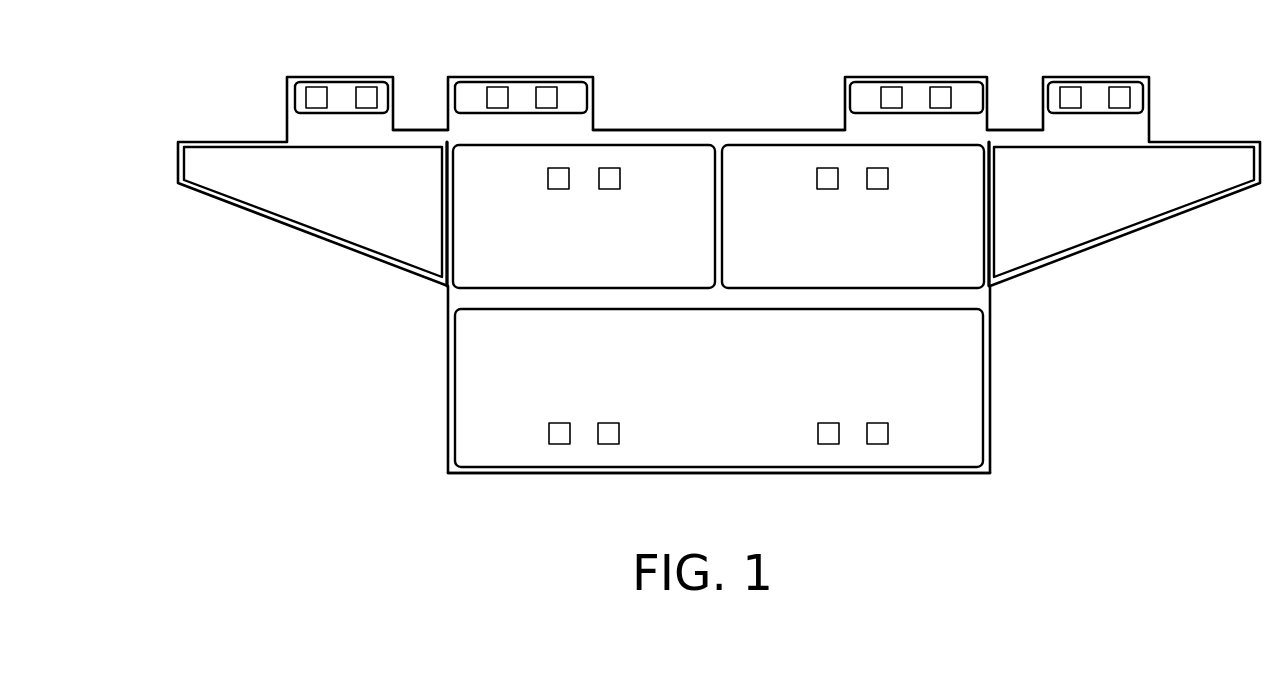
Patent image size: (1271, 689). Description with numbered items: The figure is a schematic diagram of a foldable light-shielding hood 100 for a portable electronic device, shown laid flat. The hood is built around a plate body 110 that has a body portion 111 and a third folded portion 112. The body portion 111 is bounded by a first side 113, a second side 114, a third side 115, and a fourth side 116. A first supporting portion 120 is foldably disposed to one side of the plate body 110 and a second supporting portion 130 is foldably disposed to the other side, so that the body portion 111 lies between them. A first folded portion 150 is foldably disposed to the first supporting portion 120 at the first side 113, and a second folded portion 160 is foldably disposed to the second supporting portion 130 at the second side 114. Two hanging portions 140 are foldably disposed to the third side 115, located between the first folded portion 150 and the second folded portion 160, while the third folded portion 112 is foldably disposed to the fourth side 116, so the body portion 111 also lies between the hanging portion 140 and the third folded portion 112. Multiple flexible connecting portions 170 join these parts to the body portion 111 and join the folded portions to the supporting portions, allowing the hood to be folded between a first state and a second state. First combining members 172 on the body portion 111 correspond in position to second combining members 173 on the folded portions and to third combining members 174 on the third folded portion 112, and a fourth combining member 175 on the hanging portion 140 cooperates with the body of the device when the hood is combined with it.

The foldable light-shielding hood 100 is at (1242, 502).
The plate body 110 is at (315, 305).
The body portion 111 is at (477, 260).
The third folded portion 112 is at (503, 383).
The first side 113 is at (446, 235).
The second side 114 is at (988, 243).
The third side 115 is at (630, 128).
The fourth side 116 is at (941, 290).
The first supporting portion 120 is at (218, 163).
The second supporting portion 130 is at (1198, 162).
The hanging portion 140 is at (523, 95).
The first folded portion 150 is at (338, 92).
The second folded portion 160 is at (1088, 95).
The flexible connecting portions 170 is at (318, 130).
The first combining members 172 is at (566, 184).
The second combining members 173 is at (324, 108).
The third combining members 174 is at (598, 425).
The fourth combining member 175 is at (500, 108).